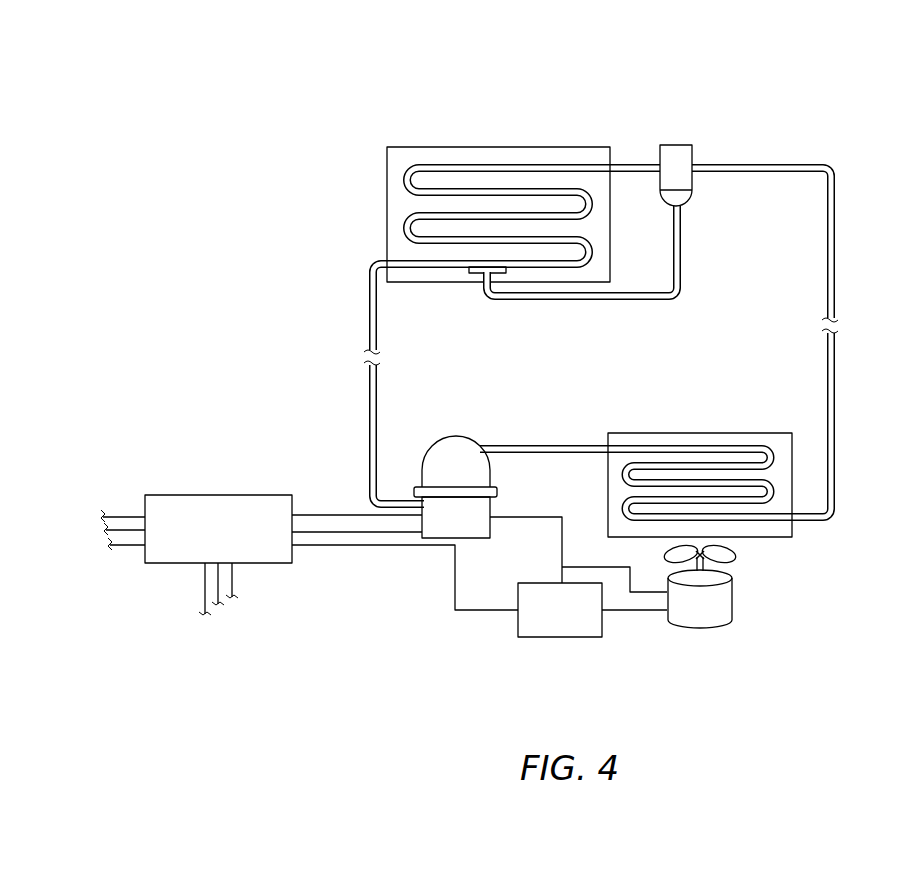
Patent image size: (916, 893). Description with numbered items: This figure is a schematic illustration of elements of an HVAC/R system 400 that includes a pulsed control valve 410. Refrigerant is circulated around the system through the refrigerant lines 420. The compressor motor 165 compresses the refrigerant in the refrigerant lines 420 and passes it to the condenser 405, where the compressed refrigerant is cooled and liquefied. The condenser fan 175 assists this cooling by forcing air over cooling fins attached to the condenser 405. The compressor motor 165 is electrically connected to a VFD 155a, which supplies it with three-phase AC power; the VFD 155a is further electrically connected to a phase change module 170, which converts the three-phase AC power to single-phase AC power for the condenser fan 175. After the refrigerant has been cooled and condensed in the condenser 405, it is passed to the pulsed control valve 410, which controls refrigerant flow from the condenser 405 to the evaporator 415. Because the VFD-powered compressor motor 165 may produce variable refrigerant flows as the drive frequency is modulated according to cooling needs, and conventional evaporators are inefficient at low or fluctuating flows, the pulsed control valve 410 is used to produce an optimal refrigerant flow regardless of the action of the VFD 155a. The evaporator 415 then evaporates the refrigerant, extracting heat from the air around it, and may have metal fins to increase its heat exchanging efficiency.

The HVAC/R system 400 is at (114, 110).
The evaporator 415 is at (466, 145).
The pulsed control valve 410 is at (676, 145).
The refrigerant lines 420 is at (835, 246).
The condenser 405 is at (698, 432).
The compressor motor 165 is at (494, 510).
The VFD 155a is at (218, 495).
The phase change module 170 is at (560, 638).
The condenser fan 175 is at (735, 598).